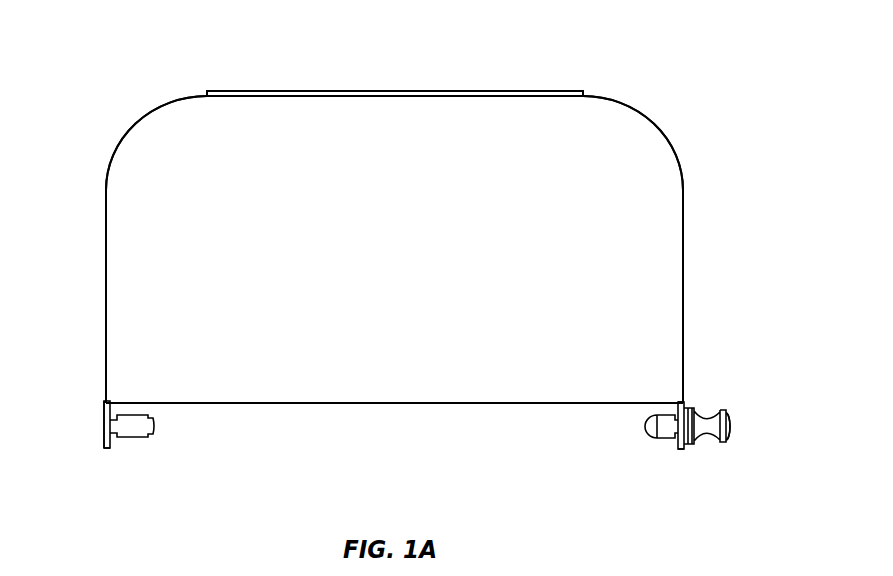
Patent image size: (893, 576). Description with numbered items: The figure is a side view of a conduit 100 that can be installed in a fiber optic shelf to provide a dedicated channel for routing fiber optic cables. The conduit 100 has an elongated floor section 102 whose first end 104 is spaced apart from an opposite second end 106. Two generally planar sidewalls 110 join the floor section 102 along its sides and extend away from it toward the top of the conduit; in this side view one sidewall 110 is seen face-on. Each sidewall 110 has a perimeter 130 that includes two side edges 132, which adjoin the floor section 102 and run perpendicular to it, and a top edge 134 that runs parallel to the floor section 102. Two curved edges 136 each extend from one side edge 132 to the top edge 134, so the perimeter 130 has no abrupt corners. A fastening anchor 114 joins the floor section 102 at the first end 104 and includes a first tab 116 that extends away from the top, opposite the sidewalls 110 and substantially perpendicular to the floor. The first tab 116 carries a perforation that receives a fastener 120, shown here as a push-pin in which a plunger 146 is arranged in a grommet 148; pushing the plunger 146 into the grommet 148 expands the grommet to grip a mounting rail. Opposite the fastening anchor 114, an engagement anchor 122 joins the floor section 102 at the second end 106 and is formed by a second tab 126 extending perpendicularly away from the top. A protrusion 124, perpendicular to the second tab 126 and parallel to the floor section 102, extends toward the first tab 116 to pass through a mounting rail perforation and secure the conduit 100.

The conduit 100 is at (252, 48).
The floor section 102 is at (445, 403).
The first end 104 is at (686, 403).
The second end 106 is at (104, 404).
The sidewalls 110 is at (414, 266).
The fastening anchor 114 is at (655, 458).
The first tab 116 is at (687, 449).
The fastener 120 is at (730, 416).
The engagement anchor 122 is at (90, 443).
The protrusion 124 is at (140, 428).
The second tab 126 is at (113, 447).
The perimeter 130 is at (384, 97).
The side edges 132 is at (106, 228).
The top edge 134 is at (458, 96).
The curved edges 136 is at (136, 126).
The plunger 146 is at (730, 432).
The grommet 148 is at (660, 427).